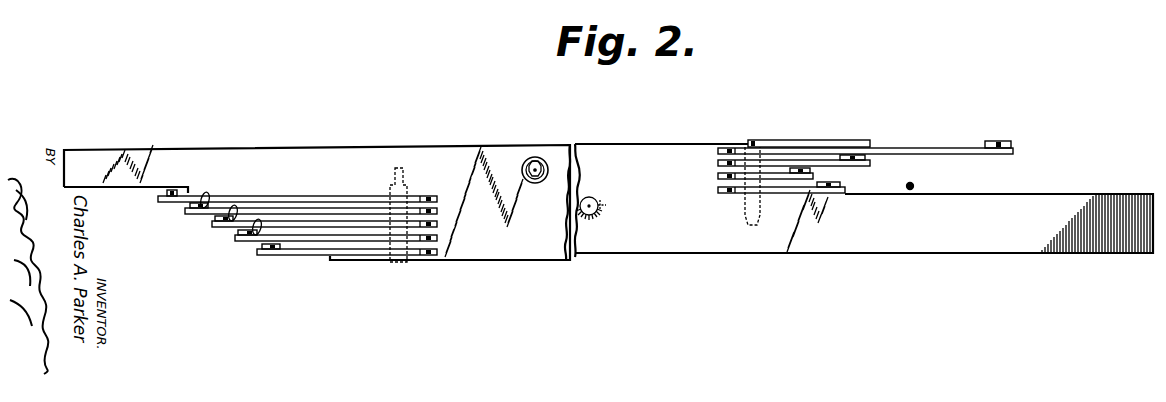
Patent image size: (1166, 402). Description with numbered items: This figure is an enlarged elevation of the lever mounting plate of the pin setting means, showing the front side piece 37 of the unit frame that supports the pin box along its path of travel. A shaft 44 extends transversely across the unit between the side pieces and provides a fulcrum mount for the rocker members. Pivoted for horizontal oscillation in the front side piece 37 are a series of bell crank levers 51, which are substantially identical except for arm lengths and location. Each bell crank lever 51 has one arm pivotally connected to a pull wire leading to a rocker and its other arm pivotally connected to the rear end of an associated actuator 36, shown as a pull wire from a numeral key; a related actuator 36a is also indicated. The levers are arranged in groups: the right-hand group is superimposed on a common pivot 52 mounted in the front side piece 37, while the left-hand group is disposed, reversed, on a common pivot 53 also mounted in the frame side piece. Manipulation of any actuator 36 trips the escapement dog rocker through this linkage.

The actuator 36 is at (166, 193).
The spring clip 36a is at (268, 6).
The front side piece 37 is at (658, 247).
The shaft 44 is at (607, 202).
The bell crank lever 51 is at (252, 194).
The common pivot 52 is at (752, 145).
The common pivot 53 is at (398, 262).